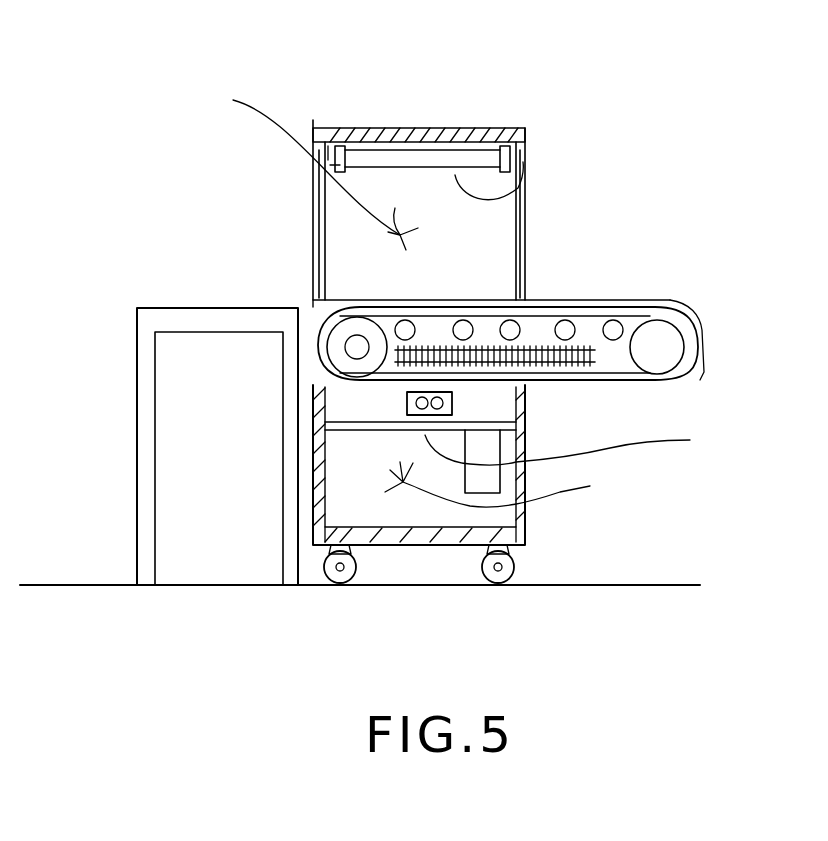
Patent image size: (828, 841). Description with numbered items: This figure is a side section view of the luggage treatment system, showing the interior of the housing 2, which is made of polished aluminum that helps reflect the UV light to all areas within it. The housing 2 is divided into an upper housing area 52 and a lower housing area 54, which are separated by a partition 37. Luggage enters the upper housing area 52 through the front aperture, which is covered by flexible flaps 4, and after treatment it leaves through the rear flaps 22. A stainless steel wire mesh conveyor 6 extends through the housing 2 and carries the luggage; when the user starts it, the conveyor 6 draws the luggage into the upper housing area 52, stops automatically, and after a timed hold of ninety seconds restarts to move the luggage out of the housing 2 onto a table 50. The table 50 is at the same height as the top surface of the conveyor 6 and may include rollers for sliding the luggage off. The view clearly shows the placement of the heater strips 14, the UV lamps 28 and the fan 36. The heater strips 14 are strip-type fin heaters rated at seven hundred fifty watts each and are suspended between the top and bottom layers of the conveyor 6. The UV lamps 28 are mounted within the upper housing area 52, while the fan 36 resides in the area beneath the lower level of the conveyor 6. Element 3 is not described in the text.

The housing 2 is at (470, 300).
The top cover 3 is at (421, 128).
The flexible flaps 4 is at (527, 228).
The stainless steel wire mesh conveyor 6 is at (550, 306).
The heating element 14 is at (530, 345).
The rear flaps 22 is at (318, 236).
The UV lamp 28 is at (522, 165).
The fan 36 is at (452, 403).
The partition 37 is at (579, 459).
The table 50 is at (190, 304).
The upper housing area 52 is at (294, 165).
The lower housing area 54 is at (510, 484).